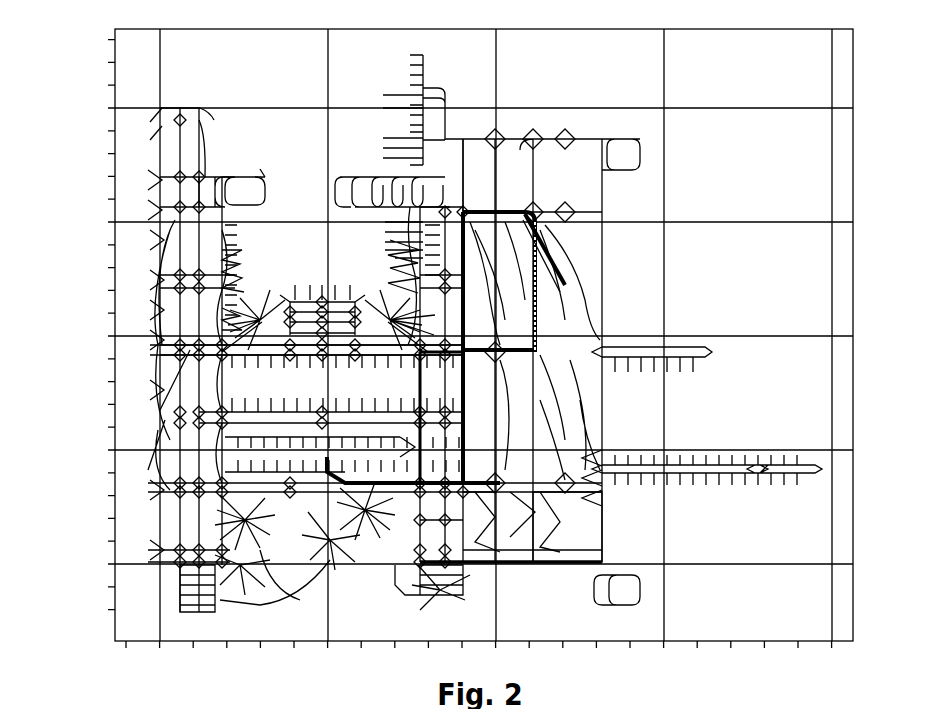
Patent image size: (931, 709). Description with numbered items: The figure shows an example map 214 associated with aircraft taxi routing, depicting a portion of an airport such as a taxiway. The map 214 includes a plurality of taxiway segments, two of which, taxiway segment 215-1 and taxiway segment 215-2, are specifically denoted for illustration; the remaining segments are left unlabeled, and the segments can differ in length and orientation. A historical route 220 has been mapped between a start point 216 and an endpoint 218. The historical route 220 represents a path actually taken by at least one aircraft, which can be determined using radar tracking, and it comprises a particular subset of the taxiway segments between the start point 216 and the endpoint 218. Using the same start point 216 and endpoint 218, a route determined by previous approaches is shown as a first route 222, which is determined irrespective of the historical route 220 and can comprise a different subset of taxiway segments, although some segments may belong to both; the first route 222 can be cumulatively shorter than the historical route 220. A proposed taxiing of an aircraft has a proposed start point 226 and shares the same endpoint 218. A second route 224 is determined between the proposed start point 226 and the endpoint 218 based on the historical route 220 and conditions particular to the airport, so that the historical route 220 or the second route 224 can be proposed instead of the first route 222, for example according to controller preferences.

The map 214 is at (727, 86).
The taxiway segment 215-1 is at (603, 498).
The taxiway segment 215-2 is at (676, 452).
The start point 216 is at (570, 292).
The endpoint 218 is at (370, 516).
The historical route 220 is at (472, 518).
The first route 222 is at (542, 347).
The second route 224 is at (335, 494).
The proposed start point 226 is at (316, 448).